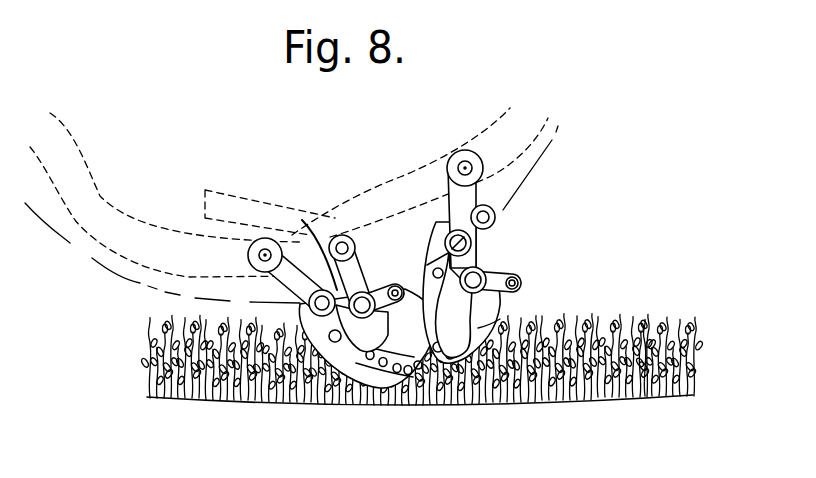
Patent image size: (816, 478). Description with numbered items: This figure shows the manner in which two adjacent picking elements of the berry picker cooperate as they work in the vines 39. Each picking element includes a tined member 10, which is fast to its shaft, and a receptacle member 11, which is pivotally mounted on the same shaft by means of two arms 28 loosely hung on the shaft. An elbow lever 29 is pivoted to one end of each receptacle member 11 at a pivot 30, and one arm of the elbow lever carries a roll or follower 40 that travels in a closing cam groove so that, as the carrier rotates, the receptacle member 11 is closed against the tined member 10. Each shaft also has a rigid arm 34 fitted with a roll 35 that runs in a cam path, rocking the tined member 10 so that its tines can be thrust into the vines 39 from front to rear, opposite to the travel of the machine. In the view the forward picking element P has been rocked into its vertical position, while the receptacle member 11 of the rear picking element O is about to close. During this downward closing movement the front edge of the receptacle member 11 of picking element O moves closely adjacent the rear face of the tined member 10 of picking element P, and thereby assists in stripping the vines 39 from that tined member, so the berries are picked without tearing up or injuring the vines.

The tined member 10 is at (425, 292).
The receptacle member 11 is at (490, 316).
The arms 28 is at (304, 248).
The elbow lever 29 is at (364, 270).
The pivot of elbow lever 30 is at (371, 311).
The arm 34 is at (290, 283).
The roll 35 is at (247, 256).
The vines 39 is at (304, 378).
The roll or follower 40 is at (344, 237).
The picking element O is at (382, 347).
The picking element P is at (482, 331).